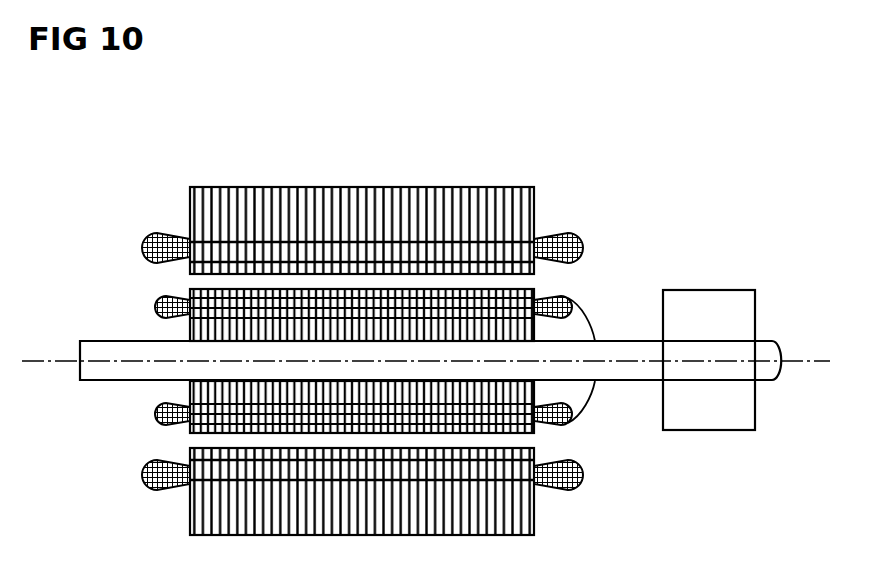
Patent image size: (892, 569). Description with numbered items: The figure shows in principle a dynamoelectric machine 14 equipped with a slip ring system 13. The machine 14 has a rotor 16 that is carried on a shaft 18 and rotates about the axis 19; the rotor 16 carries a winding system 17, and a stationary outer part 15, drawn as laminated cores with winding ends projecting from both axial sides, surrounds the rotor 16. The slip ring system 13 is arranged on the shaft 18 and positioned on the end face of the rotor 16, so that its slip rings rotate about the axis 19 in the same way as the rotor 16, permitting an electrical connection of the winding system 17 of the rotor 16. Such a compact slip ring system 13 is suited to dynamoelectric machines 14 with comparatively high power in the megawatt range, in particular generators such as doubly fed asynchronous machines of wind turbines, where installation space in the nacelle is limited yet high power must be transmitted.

The slip ring system 13 is at (712, 290).
The dynamoelectric machine 14 is at (203, 128).
The stator 15 is at (367, 205).
The rotor 16 is at (215, 297).
The winding system 17 is at (155, 412).
The shaft 18 is at (632, 382).
The axis 19 is at (32, 362).